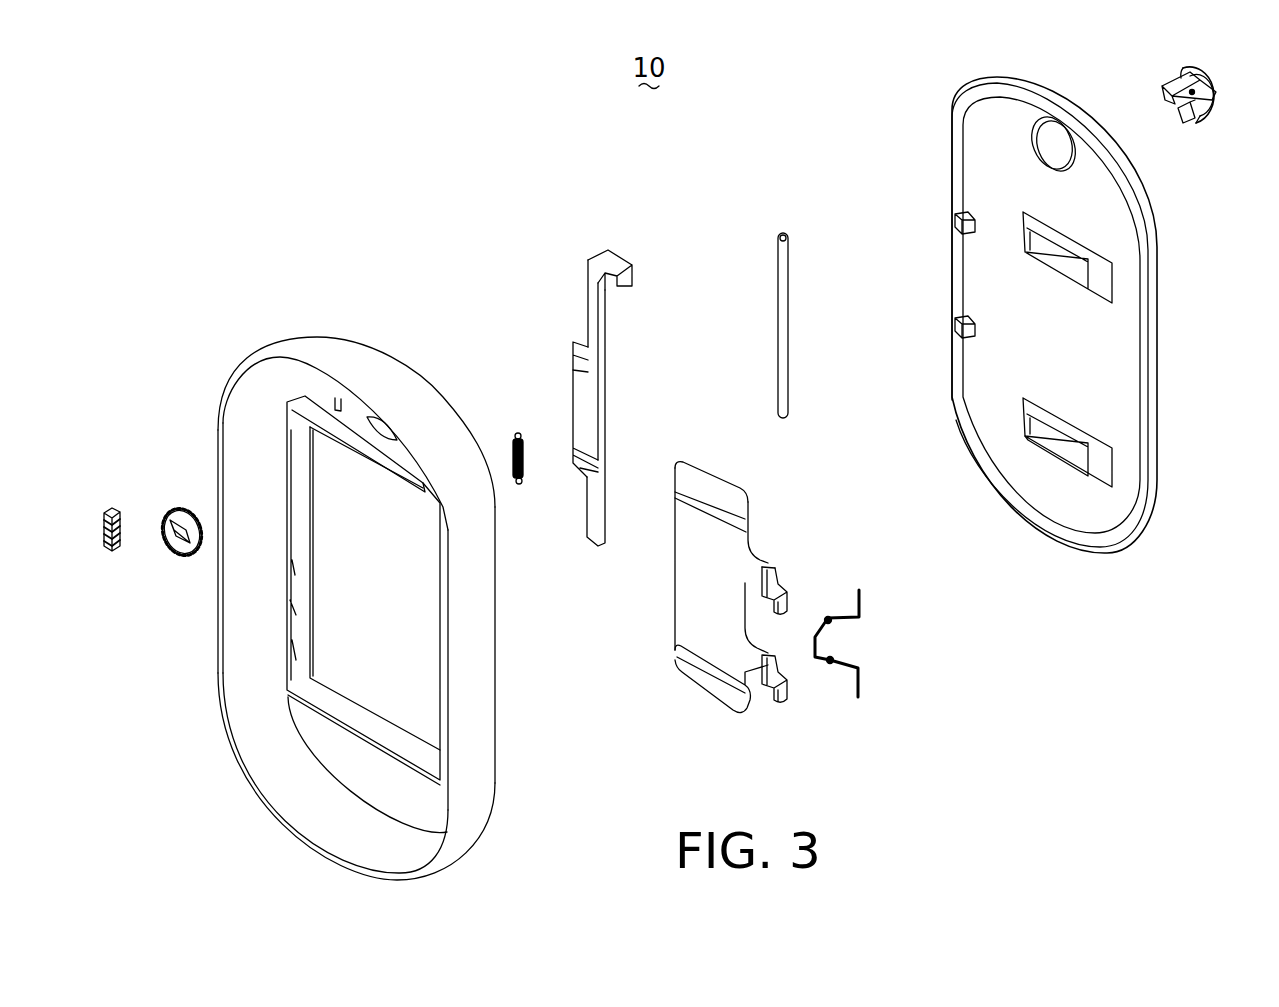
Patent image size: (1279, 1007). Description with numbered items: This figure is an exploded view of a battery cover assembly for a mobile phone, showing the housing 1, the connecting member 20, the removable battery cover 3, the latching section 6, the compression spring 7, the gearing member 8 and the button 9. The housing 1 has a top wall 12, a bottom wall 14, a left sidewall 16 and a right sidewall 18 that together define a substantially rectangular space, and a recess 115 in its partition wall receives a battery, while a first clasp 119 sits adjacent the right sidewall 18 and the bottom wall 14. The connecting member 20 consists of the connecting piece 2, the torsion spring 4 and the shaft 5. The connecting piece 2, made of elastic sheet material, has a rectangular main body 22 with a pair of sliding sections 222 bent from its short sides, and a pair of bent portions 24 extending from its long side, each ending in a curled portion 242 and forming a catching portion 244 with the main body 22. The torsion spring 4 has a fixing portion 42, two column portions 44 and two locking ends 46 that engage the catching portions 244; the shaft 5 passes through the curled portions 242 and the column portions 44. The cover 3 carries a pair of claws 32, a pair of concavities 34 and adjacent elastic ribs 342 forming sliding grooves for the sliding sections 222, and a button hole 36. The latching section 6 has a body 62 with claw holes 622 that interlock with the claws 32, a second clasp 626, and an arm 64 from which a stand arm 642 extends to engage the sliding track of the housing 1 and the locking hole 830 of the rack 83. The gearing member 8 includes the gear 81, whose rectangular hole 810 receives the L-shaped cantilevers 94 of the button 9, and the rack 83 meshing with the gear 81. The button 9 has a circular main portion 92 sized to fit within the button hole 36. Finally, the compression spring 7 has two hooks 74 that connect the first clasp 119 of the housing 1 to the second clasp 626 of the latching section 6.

The housing 1 is at (206, 380).
The connecting piece 2 is at (763, 490).
The removable battery cover 3 is at (1166, 217).
The torsion spring 4 is at (868, 586).
The shaft 5 is at (793, 412).
The latching section 6 is at (566, 256).
The compression spring 7 is at (517, 492).
The gearing member 8 is at (78, 456).
The button 9 is at (1216, 68).
The top wall 12 is at (360, 366).
The bottom wall 14 is at (348, 815).
The left sidewall 16 is at (468, 625).
The right sidewall 18 is at (248, 620).
The connecting member 20 is at (918, 392).
The main body 22 is at (695, 598).
The bent portions 24 is at (775, 590).
The claws 32 is at (950, 218).
The concavities 34 is at (1095, 455).
The button hole 36 is at (1053, 142).
The fixing portion 42 is at (812, 644).
The column portions 44 is at (834, 622).
The locking ends 46 is at (857, 600).
The body 62 is at (585, 405).
The arm 64 is at (609, 262).
The hooks 74 is at (516, 432).
The gear 81 is at (168, 508).
The rack 83 is at (108, 512).
The main portion 92 is at (1226, 86).
The L-shaped cantilevers 94 is at (1182, 84).
The recess 115 is at (405, 635).
The first clasp 119 is at (283, 647).
The sliding sections 222 is at (705, 685).
The curled portion 242 is at (785, 700).
The catching portion 244 is at (768, 566).
The elastic ribs 342 is at (1055, 455).
The claw holes 622 is at (572, 355).
The second clasp 626 is at (576, 462).
The stand arm 642 is at (630, 277).
The rectangular hole 810 is at (174, 546).
The locking hole 830 is at (106, 545).